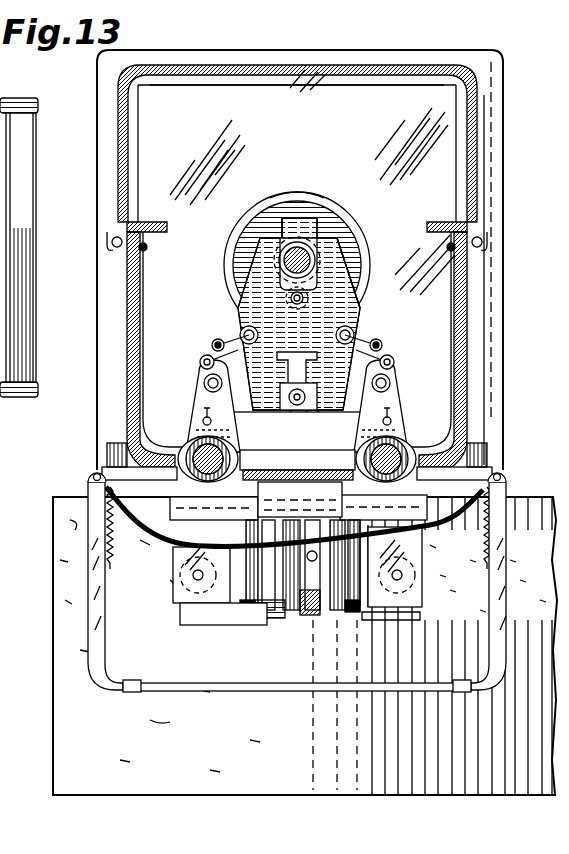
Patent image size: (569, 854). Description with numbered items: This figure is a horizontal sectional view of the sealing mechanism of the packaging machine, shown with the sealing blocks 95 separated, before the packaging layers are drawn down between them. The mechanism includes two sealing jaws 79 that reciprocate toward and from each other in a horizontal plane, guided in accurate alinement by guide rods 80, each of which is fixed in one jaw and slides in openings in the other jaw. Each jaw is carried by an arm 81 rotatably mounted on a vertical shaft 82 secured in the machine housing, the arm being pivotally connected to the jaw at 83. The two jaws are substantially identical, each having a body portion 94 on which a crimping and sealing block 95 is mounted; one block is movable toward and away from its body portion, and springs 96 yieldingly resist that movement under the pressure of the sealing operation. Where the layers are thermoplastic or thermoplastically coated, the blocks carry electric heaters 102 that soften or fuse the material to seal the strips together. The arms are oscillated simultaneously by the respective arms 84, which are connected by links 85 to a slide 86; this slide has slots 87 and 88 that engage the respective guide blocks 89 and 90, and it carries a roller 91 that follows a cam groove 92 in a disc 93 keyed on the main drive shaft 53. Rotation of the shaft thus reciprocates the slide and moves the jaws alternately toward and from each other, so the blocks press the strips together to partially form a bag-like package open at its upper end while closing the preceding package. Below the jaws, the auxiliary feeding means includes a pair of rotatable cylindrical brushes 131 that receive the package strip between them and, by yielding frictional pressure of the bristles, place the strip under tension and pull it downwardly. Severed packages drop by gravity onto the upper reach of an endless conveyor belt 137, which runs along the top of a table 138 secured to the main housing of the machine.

The main drive shaft 53 is at (300, 250).
The sealing jaws 79 is at (250, 614).
The guide rods 80 is at (299, 520).
The arm 81 is at (125, 468).
The vertical shaft 82 is at (230, 453).
The pivotal connection 83 is at (196, 582).
The arms 84 is at (200, 405).
The links 85 is at (210, 357).
The slide 86 is at (250, 307).
The slot 87 is at (262, 237).
The slot 88 is at (288, 368).
The guide block 89 is at (322, 258).
The guide block 90 is at (310, 396).
The roller 91 is at (359, 306).
The cam groove 92 is at (360, 241).
The disc 93 is at (294, 192).
The body portion 94 is at (392, 612).
The crimping and sealing block 95 is at (296, 616).
The springs 96 is at (378, 622).
The electric heaters 102 is at (322, 520).
The rotatable cylindrical brushes 131 is at (268, 620).
The endless conveyor belt 137 is at (515, 548).
The table 138 is at (60, 535).